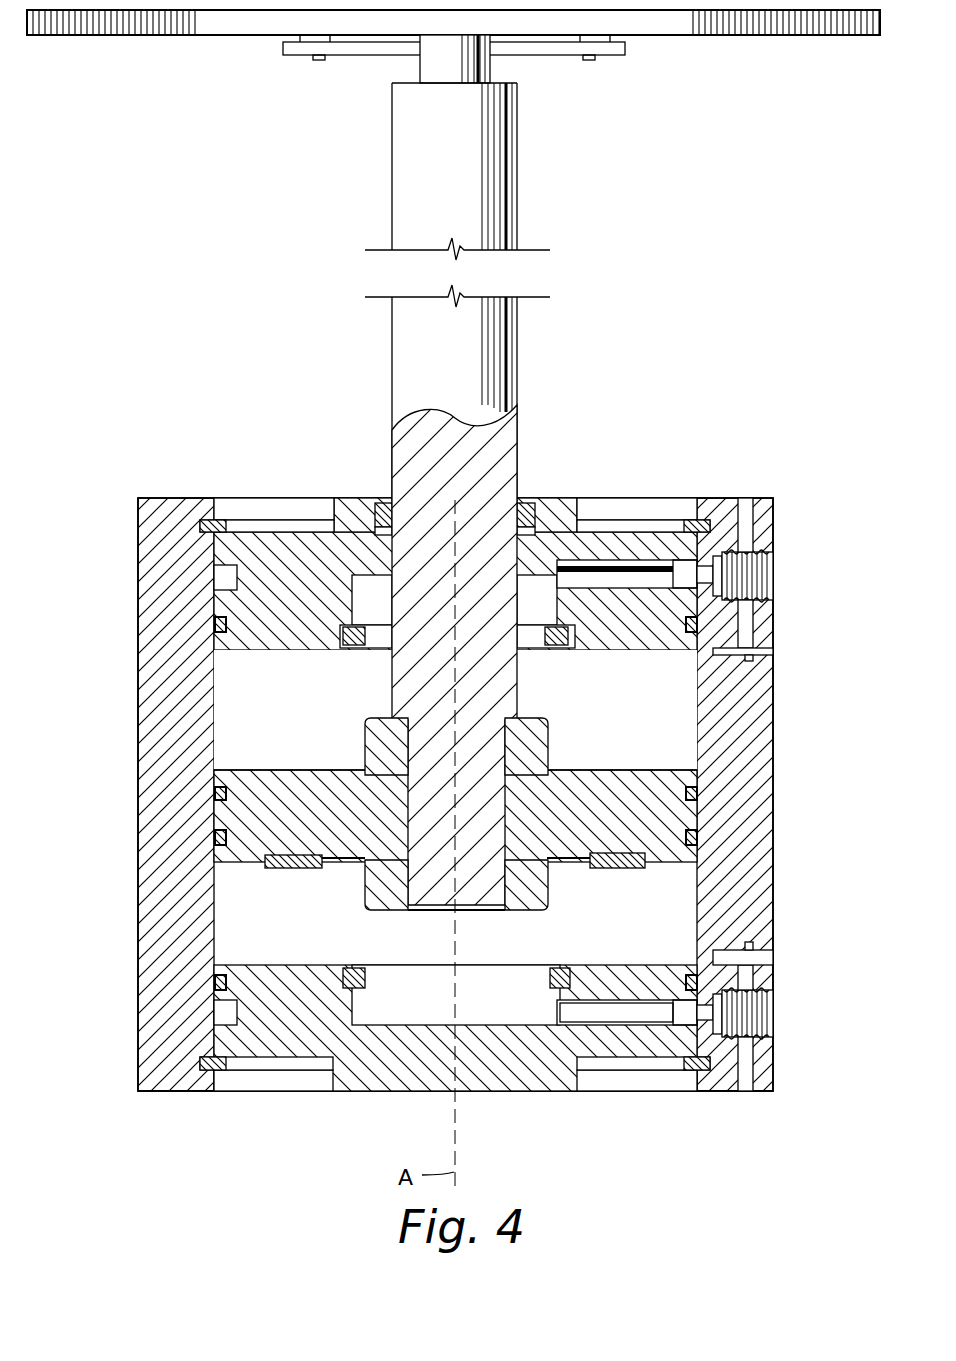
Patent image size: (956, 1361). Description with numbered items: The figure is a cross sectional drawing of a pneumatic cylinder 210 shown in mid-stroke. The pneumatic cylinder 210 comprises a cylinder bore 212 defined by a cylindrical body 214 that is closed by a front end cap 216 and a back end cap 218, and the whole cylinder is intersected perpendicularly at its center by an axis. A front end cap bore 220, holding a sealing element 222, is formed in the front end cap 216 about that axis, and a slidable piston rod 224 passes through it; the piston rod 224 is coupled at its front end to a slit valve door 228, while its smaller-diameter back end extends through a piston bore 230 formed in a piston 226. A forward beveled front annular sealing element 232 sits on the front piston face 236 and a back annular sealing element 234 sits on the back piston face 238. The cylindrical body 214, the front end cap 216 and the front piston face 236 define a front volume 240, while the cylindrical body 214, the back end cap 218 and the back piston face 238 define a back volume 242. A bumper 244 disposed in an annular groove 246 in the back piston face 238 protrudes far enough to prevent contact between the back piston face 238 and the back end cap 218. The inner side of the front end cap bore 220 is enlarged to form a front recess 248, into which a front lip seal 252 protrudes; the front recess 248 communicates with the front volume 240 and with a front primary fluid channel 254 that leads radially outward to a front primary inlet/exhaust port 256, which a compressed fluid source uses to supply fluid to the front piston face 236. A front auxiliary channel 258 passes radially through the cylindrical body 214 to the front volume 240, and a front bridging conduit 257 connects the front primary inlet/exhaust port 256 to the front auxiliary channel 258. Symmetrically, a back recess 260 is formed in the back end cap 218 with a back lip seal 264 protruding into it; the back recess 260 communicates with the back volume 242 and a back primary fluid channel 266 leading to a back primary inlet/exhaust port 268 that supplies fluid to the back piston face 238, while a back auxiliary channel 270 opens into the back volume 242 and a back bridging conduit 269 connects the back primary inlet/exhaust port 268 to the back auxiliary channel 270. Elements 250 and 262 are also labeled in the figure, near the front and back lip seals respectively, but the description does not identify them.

The pneumatic cylinder 210 is at (117, 769).
The cylinder bore 212 is at (214, 723).
The cylindrical body 214 is at (140, 1046).
The front end cap 216 is at (272, 530).
The back end cap 218 is at (380, 1093).
The front end cap bore 220 is at (502, 540).
The sealing element 222 is at (378, 512).
The piston rod 224 is at (391, 340).
The piston 226 is at (683, 816).
The slit valve door 228 is at (135, 36).
The piston bore 230 is at (408, 795).
The front annular sealing element 232 is at (550, 733).
The back annular sealing element 234 is at (375, 905).
The front piston face 236 is at (580, 768).
The back piston face 238 is at (668, 868).
The front volume 240 is at (245, 685).
The back volume 242 is at (235, 892).
The bumper 244 is at (278, 870).
The annular groove 246 is at (320, 870).
The front recess 248 is at (378, 645).
The seal 250 is at (560, 646).
The front lip seal 252 is at (352, 642).
The front primary fluid channel 254 is at (640, 575).
The front primary inlet/exhaust port 256 is at (765, 590).
The front bridging conduit 257 is at (745, 622).
The front auxiliary channel 258 is at (727, 655).
The back recess 260 is at (510, 1093).
The seal 262 is at (577, 977).
The back lip seal 264 is at (365, 975).
The back primary fluid channel 266 is at (640, 1093).
The back primary inlet/exhaust port 268 is at (770, 1020).
The back bridging conduit 269 is at (758, 972).
The back auxiliary channel 270 is at (738, 945).